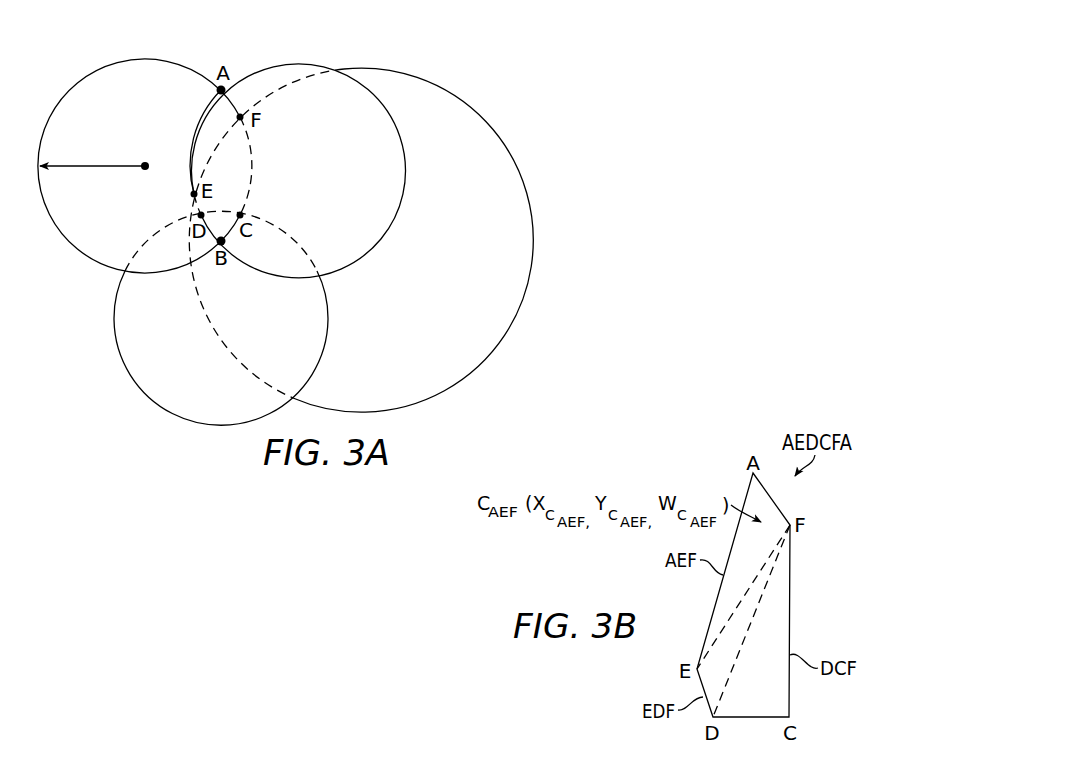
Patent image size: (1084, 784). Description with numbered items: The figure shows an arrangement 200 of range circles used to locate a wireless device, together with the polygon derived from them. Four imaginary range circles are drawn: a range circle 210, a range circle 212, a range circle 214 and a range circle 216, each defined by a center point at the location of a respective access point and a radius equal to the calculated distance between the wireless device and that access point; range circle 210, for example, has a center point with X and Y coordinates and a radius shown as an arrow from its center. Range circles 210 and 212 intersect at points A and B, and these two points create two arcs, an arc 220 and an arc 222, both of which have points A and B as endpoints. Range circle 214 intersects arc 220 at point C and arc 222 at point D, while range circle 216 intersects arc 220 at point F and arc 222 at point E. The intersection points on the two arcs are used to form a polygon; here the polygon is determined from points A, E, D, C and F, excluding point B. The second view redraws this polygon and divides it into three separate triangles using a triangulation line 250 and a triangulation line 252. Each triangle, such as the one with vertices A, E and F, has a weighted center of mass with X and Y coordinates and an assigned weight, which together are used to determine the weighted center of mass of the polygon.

In FIG. 3A, the coverage region arrangement 200 is at (539, 134).
In FIG. 3A, the range circle 210 is at (92, 71).
In FIG. 3A, the range circle 212 is at (280, 59).
In FIG. 3A, the range circle 214 is at (167, 413).
In FIG. 3A, the range circle 216 is at (533, 242).
In FIG. 3A, the arc 220 is at (252, 165).
In FIG. 3A, the arc 222 is at (189, 171).
In FIG. 3B, the triangulation line 250 is at (726, 622).
In FIG. 3B, the triangulation line 252 is at (773, 567).